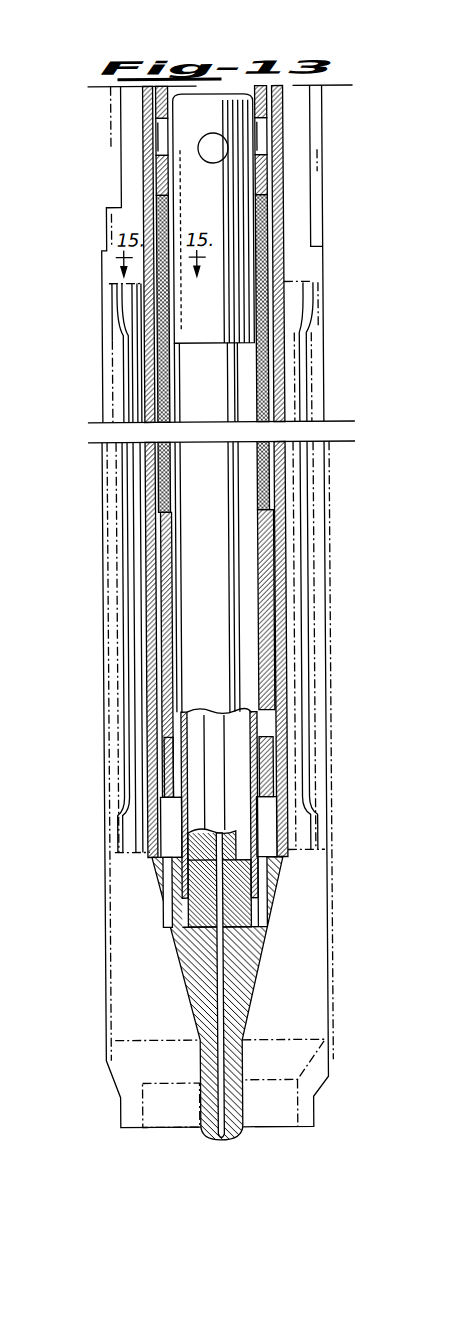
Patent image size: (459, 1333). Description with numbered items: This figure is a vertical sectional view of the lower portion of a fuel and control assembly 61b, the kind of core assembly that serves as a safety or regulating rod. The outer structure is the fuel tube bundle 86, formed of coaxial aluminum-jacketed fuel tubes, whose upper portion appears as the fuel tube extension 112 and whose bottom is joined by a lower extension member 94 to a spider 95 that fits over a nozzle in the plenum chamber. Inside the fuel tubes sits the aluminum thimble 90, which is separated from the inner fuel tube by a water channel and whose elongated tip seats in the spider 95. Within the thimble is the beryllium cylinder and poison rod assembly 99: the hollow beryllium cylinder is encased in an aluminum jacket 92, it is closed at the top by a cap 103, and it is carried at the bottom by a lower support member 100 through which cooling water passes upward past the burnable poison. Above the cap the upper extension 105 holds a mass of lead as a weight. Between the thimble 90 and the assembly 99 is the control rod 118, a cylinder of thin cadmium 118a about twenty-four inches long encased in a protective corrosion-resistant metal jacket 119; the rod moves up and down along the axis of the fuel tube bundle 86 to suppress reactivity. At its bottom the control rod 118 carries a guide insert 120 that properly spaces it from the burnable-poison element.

The fuel and control assembly 61b is at (345, 513).
The fuel tube extension 112 is at (318, 158).
The protective corrosion-resistant metal jacket 119 is at (127, 167).
The thimble 90 is at (284, 222).
The control rod 118 is at (262, 185).
The cadmium 118a is at (266, 262).
The upper extension 105 is at (190, 187).
The cap 103 is at (189, 333).
The fuel tube bundle 86 is at (140, 598).
The lower extension member 94 is at (100, 917).
The aluminum jacket 92 is at (195, 523).
The beryllium cylinder and poison rod assembly 99 is at (198, 633).
The lower support member 100 is at (210, 758).
The guide insert 120 is at (266, 768).
The spider 95 is at (206, 1107).